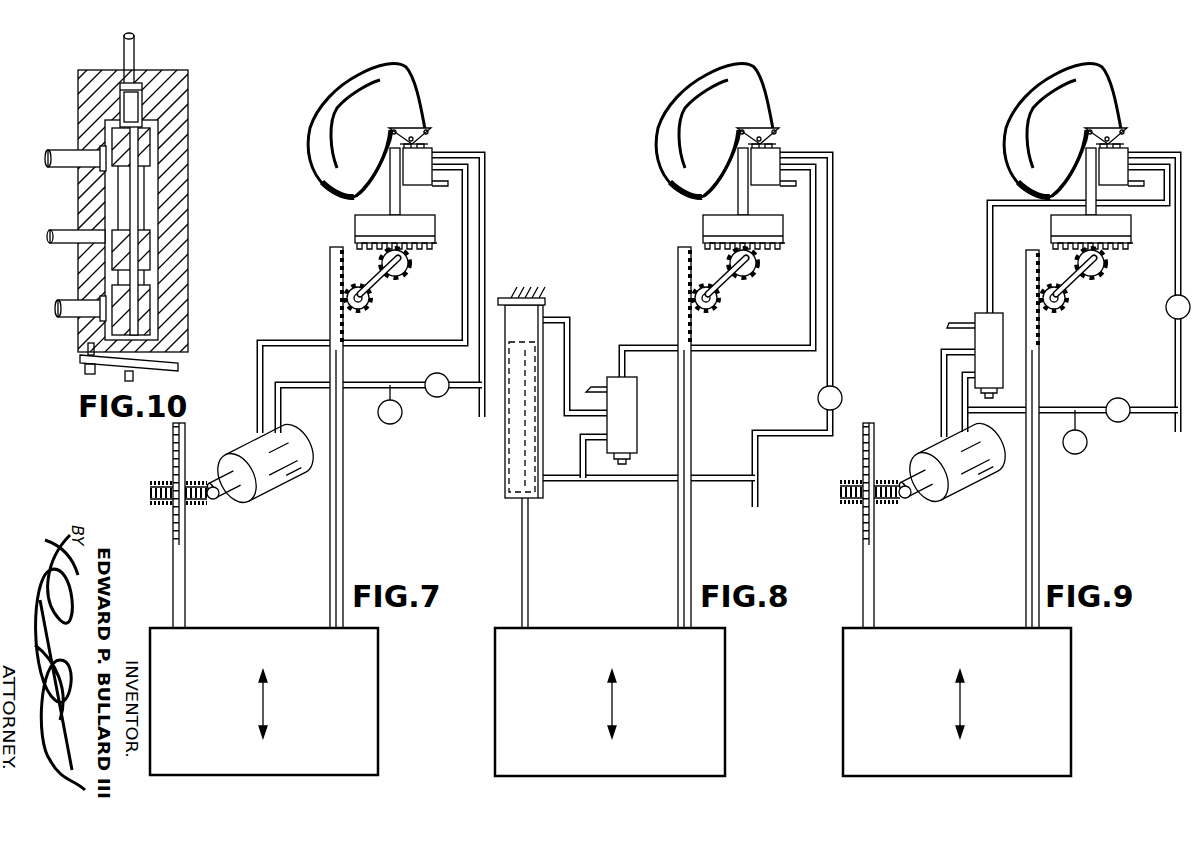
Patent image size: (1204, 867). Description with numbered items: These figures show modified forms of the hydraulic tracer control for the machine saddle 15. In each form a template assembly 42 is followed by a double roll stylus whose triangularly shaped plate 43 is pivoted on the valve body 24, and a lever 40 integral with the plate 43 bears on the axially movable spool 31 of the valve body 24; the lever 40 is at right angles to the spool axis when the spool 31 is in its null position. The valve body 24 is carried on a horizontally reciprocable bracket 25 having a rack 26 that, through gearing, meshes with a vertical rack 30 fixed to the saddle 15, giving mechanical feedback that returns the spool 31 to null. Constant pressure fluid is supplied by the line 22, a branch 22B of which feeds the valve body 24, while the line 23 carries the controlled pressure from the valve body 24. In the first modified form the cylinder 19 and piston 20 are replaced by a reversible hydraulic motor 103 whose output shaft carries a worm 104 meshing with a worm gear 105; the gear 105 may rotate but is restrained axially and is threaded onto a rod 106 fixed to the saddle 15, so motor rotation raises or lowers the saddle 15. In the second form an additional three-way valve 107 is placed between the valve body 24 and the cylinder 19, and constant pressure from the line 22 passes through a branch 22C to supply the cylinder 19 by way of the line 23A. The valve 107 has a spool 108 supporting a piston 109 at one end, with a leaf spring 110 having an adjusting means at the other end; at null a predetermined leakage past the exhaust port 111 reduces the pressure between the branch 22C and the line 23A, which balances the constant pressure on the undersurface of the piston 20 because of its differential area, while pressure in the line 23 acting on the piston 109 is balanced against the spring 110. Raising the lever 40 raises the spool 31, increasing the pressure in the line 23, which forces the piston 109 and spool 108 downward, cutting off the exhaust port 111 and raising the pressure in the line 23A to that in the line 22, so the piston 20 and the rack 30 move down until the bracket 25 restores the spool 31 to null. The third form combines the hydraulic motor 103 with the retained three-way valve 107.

In FIG. 7, the saddle 15 is at (338, 684).
In FIG. 8, the saddle 15 is at (610, 702).
In FIG. 9, the saddle 15 is at (957, 702).
In FIG. 8, the cylinder 19 is at (503, 457).
In FIG. 8, the piston 20 is at (577, 364).
In FIG. 9, the piston 20 is at (961, 325).
In FIG. 7, the fluid transmission line 22 is at (380, 403).
In FIG. 8, the fluid transmission line 22 is at (649, 495).
In FIG. 9, the fluid transmission line 22 is at (1071, 426).
In FIG. 7, the branch of constant pressure line 22B is at (485, 220).
In FIG. 8, the branch of constant pressure line 22B is at (811, 331).
In FIG. 9, the branch of constant pressure line 22B is at (1155, 293).
In FIG. 8, the branch line 22C is at (577, 457).
In FIG. 9, the branch line 22C is at (932, 403).
In FIG. 10, the branch line 22C is at (83, 302).
In FIG. 7, the line 23 is at (462, 304).
In FIG. 8, the line 23 is at (717, 272).
In FIG. 9, the line 23 is at (1056, 240).
In FIG. 10, the line 23 is at (127, 45).
In FIG. 8, the line 23A is at (578, 357).
In FIG. 9, the line 23A is at (927, 390).
In FIG. 10, the line 23A is at (65, 223).
In FIG. 7, the valve body 24 is at (416, 170).
In FIG. 8, the valve body 24 is at (773, 180).
In FIG. 9, the valve body 24 is at (1130, 194).
In FIG. 7, the bracket 25 is at (362, 225).
In FIG. 8, the bracket 25 is at (715, 231).
In FIG. 9, the bracket 25 is at (1069, 232).
In FIG. 7, the rack 26 is at (423, 249).
In FIG. 8, the rack 26 is at (739, 279).
In FIG. 9, the rack 26 is at (1088, 279).
In FIG. 7, the vertical rack 30 is at (347, 322).
In FIG. 8, the vertical rack 30 is at (705, 437).
In FIG. 9, the vertical rack 30 is at (1049, 439).
In FIG. 7, the spool 31 is at (430, 148).
In FIG. 8, the spool 31 is at (792, 140).
In FIG. 9, the spool 31 is at (1138, 139).
In FIG. 7, the lever 40 is at (432, 132).
In FIG. 8, the lever 40 is at (785, 127).
In FIG. 9, the lever 40 is at (1130, 126).
In FIG. 7, the template assembly 42 is at (425, 81).
In FIG. 8, the template assembly 42 is at (757, 120).
In FIG. 9, the template assembly 42 is at (1044, 120).
In FIG. 7, the triangularly shaped plate 43 is at (412, 127).
In FIG. 8, the triangularly shaped plate 43 is at (761, 142).
In FIG. 9, the triangularly shaped plate 43 is at (1105, 141).
In FIG. 7, the reversible hydraulic motor 103 is at (273, 482).
In FIG. 9, the reversible hydraulic motor 103 is at (957, 471).
In FIG. 7, the worm 104 is at (223, 500).
In FIG. 9, the worm 104 is at (930, 510).
In FIG. 7, the worm gear 105 is at (200, 502).
In FIG. 9, the worm gear 105 is at (886, 529).
In FIG. 7, the rod 106 is at (187, 533).
In FIG. 9, the rod 106 is at (845, 525).
In FIG. 8, the three-way valve 107 is at (677, 419).
In FIG. 9, the three-way valve 107 is at (946, 333).
In FIG. 10, the three-way valve 107 is at (205, 170).
In FIG. 10, the spool 108 is at (147, 222).
In FIG. 10, the piston 109 is at (138, 107).
In FIG. 10, the leaf spring 110 is at (148, 364).
In FIG. 10, the exhaust port 111 is at (98, 158).